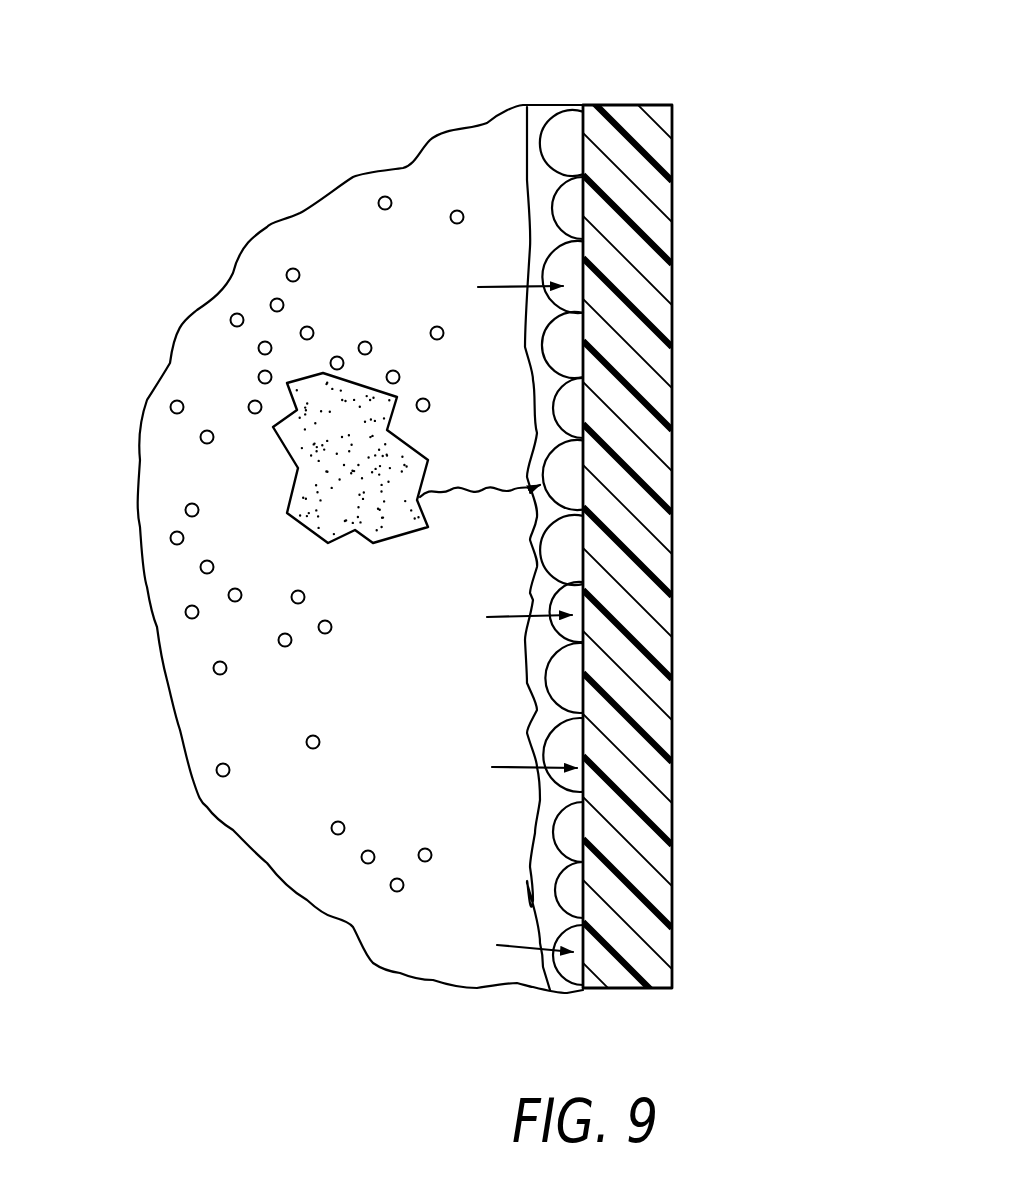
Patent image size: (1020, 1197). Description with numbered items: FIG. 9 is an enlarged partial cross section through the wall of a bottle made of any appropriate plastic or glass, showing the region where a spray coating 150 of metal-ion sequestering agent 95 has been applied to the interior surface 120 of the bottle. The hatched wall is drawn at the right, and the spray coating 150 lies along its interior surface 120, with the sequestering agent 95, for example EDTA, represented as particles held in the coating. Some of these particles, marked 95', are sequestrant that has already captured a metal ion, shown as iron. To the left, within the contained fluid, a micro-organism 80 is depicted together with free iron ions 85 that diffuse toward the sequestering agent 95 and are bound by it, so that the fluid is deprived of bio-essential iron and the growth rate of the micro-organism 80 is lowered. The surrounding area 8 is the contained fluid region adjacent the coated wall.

The pad body / polymer matrix 8 is at (232, 805).
The micro-organism 80 is at (307, 447).
The free iron ion 85 is at (416, 277).
The metal-ion sequestering agent 95 is at (645, 517).
The sequestrant with sequestered metal-ion 95' is at (594, 292).
The interior surface 120 is at (537, 397).
The spray coating 150 is at (533, 176).